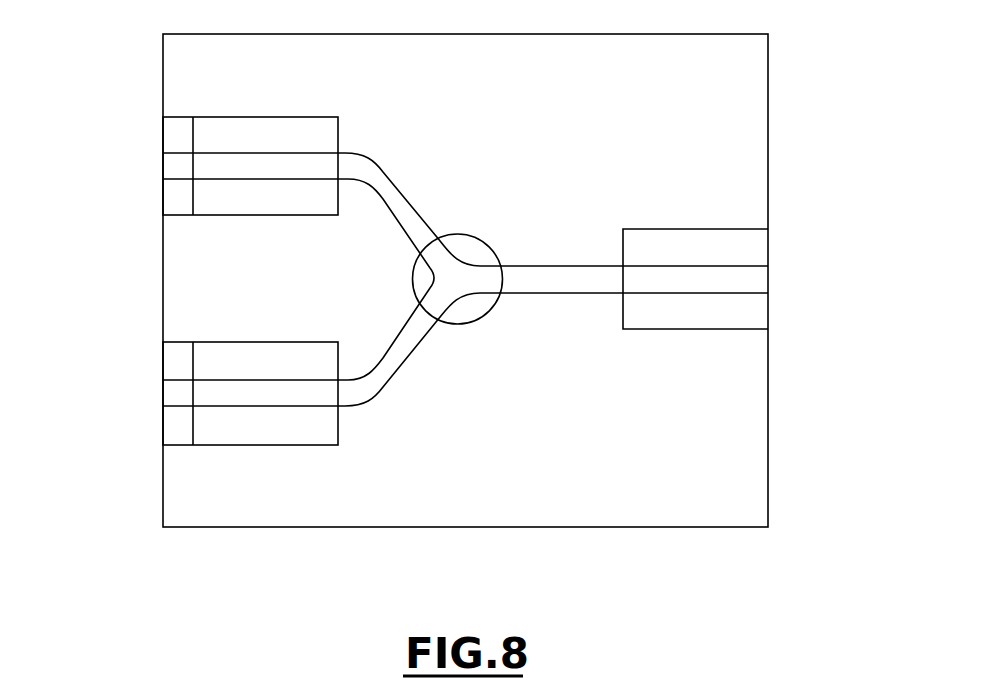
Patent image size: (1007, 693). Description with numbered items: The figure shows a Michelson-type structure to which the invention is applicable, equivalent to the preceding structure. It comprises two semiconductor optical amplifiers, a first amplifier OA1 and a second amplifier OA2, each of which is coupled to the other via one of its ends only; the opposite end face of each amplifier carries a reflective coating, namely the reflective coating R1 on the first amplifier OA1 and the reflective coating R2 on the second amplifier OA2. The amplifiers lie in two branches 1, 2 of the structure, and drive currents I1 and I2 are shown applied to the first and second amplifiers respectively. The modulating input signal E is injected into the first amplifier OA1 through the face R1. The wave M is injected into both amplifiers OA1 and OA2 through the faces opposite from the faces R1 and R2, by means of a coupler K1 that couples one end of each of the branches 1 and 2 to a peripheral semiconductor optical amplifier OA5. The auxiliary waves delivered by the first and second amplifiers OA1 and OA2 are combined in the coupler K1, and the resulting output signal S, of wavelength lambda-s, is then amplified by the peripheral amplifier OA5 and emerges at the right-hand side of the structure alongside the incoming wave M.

The first amplifier OA1 is at (250, 190).
The second amplifier OA2 is at (250, 417).
The peripheral semiconductor optical amplifier OA5 is at (695, 300).
The reflective coating R1 is at (178, 198).
The reflective coating R2 is at (178, 430).
The coupler K1 is at (483, 318).
The first injection current I1 is at (237, 136).
The second injection current I2 is at (237, 364).
The branch 1 is at (465, 266).
The branch 2 is at (465, 350).
The modulating input signal E is at (146, 165).
The wave M is at (890, 272).
The output signal S is at (888, 289).